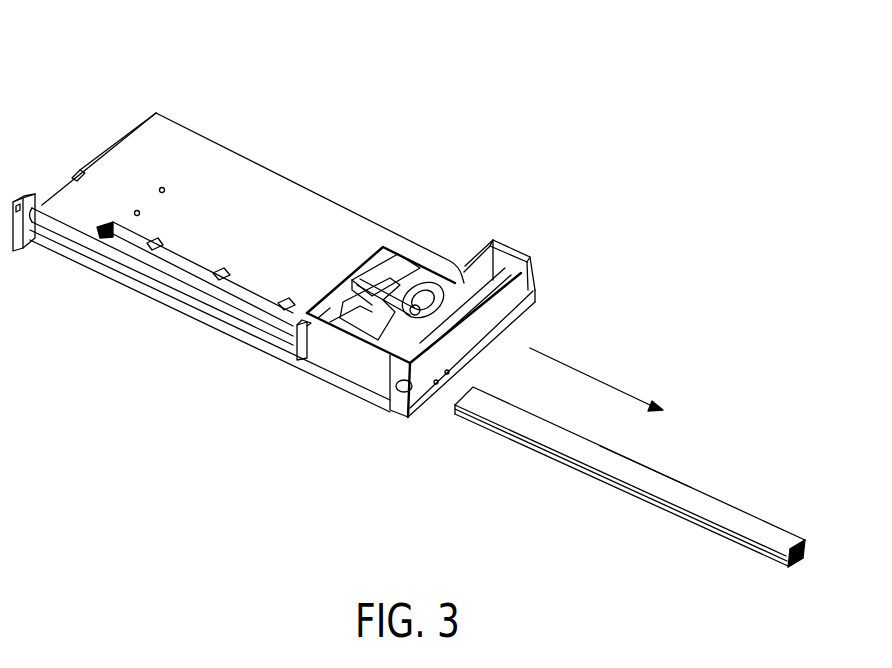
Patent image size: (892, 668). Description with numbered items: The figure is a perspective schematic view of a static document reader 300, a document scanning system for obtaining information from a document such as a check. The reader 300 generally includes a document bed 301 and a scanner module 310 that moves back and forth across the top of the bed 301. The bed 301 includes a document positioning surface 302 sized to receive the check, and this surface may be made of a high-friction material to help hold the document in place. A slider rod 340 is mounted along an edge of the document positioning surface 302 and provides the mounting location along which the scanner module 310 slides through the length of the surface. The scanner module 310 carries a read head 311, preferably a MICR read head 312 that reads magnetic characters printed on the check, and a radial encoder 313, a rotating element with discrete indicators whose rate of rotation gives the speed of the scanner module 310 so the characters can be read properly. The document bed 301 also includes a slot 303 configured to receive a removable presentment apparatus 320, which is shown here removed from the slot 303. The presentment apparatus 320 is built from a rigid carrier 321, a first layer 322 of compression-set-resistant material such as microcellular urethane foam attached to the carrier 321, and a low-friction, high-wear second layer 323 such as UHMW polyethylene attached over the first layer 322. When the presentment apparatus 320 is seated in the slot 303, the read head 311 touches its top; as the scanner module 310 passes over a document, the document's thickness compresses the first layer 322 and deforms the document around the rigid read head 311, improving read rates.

The static document reader 300 is at (338, 88).
The document bed 301 is at (205, 317).
The document positioning surface 302 is at (358, 228).
The slot 303 is at (168, 257).
The scanner module 310 is at (533, 273).
The read head 311 is at (352, 330).
The MICR read head 312 is at (365, 333).
The radial encoder 313 is at (427, 290).
The presentment apparatus 320 is at (457, 408).
The carrier 321 is at (792, 560).
The first layer 322 is at (800, 540).
The second layer 323 is at (675, 490).
The slider rod 340 is at (48, 222).